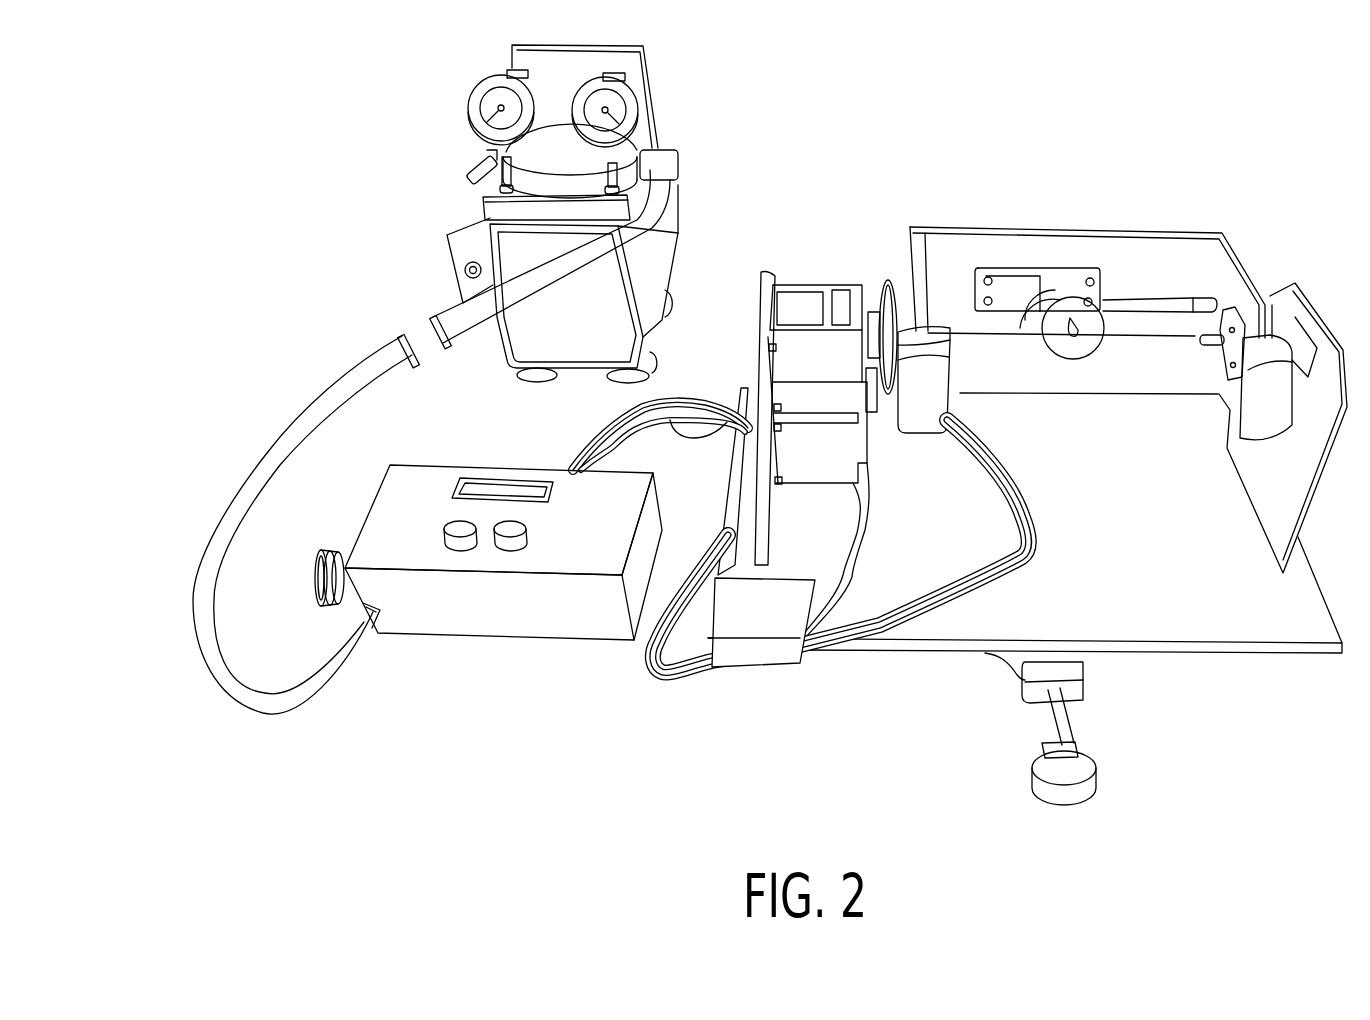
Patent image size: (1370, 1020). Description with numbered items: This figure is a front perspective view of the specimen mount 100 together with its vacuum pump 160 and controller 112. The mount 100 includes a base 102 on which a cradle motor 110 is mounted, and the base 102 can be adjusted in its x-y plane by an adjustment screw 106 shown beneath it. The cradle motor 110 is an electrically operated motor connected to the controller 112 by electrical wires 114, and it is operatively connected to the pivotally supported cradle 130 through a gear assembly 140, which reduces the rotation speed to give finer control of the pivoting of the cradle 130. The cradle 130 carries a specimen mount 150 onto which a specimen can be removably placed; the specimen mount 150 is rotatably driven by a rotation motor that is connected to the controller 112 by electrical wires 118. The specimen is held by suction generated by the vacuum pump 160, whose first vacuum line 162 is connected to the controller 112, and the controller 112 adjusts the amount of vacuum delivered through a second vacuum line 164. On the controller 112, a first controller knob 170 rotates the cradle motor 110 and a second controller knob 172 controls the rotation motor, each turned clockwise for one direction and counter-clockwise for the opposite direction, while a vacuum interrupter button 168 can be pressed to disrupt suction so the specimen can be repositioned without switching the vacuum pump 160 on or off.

The mount 100 is at (1070, 162).
The base 102 is at (1211, 622).
The adjustment screw 106 is at (1083, 788).
The cradle motor 110 is at (832, 398).
The controller 112 is at (492, 603).
The electrical wires 114 is at (695, 423).
The electrical wires 118 is at (835, 647).
The cradle 130 is at (1145, 254).
The gear assembly 140 is at (890, 284).
The specimen mount 150 is at (1077, 344).
The vacuum pump 160 is at (460, 242).
The first vacuum line 162 is at (268, 458).
The second vacuum line 164 is at (664, 683).
The vacuum interrupter button 168 is at (318, 580).
The first controller knob 170 is at (458, 540).
The second controller knob 172 is at (517, 540).